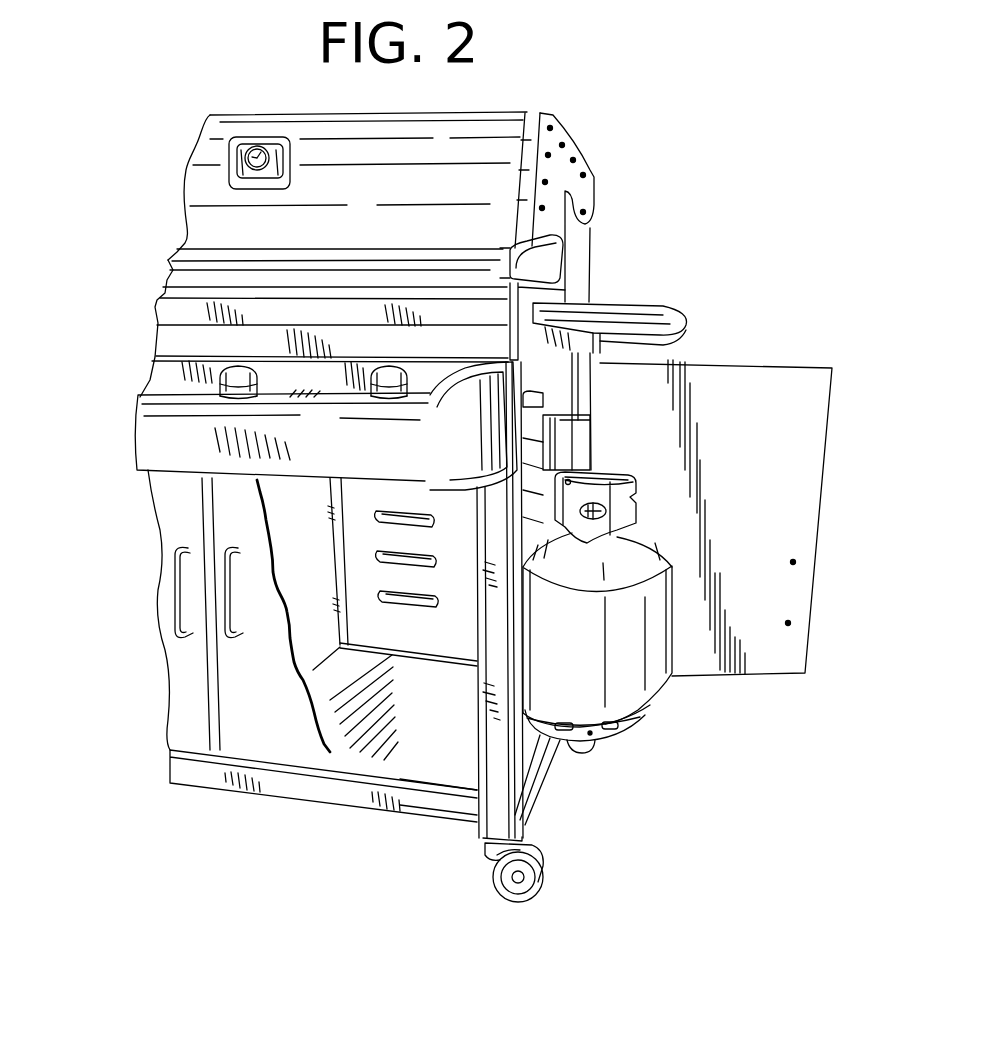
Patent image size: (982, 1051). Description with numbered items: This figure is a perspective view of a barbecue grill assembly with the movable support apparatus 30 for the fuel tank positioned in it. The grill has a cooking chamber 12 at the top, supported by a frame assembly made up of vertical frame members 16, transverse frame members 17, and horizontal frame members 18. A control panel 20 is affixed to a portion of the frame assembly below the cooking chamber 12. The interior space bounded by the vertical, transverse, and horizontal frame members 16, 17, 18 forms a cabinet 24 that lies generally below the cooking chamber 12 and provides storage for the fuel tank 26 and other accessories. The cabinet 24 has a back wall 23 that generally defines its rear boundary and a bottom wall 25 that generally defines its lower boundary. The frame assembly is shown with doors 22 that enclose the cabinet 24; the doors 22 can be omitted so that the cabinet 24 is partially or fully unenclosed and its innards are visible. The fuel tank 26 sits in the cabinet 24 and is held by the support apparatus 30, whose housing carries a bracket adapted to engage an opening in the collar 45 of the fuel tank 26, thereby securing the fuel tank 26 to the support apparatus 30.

The cooking chamber 12 is at (603, 231).
The vertical frame members 16 is at (582, 390).
The transverse frame members 17 is at (674, 330).
The horizontal frame members 18 is at (213, 775).
The control panel 20 is at (124, 441).
The doors 22 is at (790, 511).
The back wall 23 is at (371, 540).
The cabinet 24 is at (395, 737).
The bottom wall 25 is at (448, 774).
The fuel tank 26 is at (623, 684).
The support apparatus 30 is at (582, 442).
The collar 45 is at (617, 497).